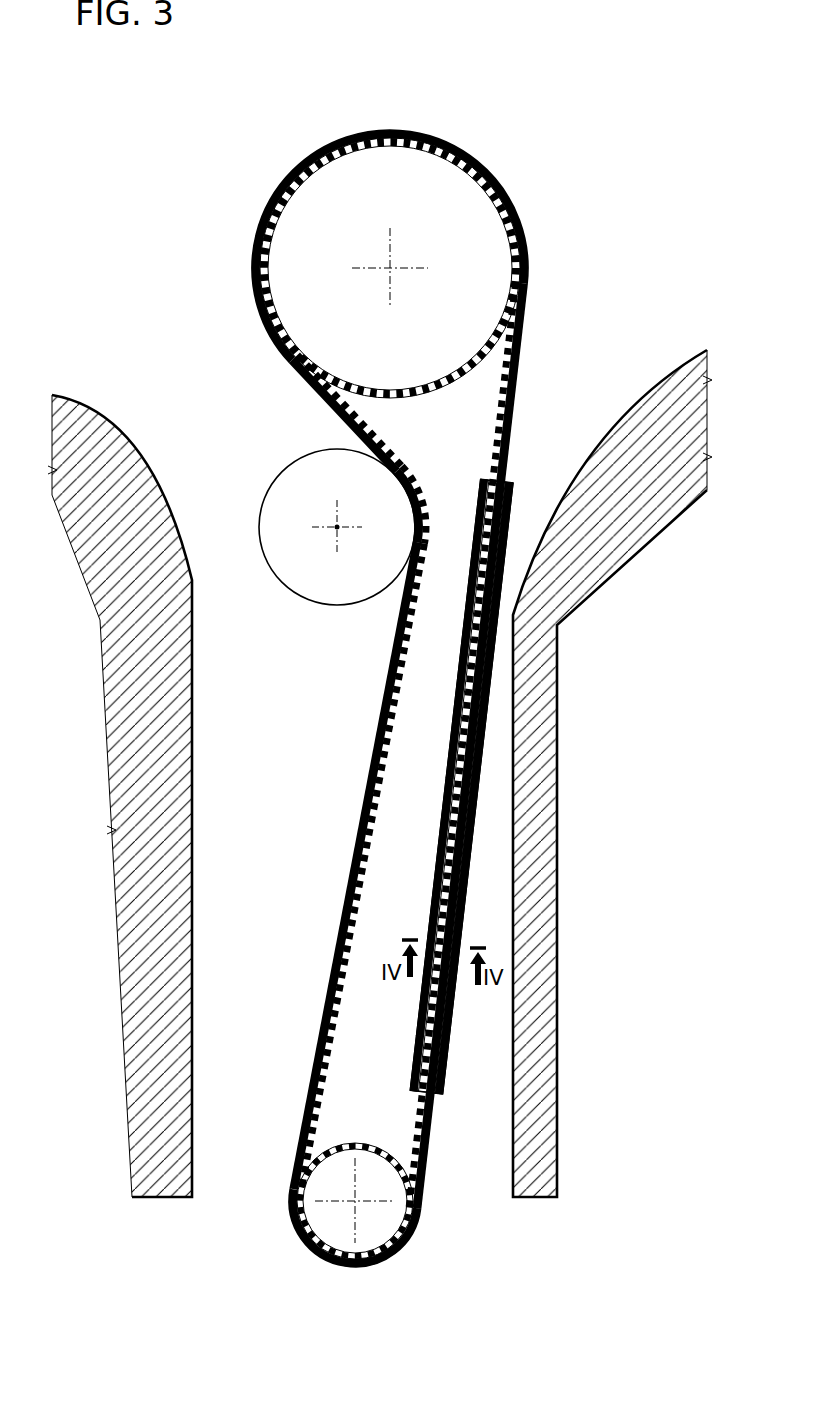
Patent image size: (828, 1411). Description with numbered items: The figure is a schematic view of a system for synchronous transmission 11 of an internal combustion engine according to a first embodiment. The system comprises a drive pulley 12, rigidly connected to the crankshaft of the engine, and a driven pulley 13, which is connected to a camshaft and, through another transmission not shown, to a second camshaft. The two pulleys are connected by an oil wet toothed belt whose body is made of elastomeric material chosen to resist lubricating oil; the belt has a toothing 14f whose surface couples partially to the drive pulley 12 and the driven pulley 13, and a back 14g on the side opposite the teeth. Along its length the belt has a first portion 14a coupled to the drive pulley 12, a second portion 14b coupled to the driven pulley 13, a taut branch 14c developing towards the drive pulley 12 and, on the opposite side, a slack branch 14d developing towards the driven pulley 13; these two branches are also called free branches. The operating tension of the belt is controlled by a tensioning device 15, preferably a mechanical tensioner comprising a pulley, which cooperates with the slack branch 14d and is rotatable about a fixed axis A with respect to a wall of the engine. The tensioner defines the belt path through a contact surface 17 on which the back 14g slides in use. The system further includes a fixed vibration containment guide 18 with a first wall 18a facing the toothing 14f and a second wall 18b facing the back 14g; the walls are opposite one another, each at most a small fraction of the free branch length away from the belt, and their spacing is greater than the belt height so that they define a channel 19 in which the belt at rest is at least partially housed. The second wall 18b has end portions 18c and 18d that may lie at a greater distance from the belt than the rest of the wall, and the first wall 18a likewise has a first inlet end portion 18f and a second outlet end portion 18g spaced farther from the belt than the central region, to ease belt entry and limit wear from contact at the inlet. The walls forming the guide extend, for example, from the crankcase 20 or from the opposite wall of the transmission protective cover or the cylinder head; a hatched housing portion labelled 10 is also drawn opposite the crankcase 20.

The housing portion 10 is at (590, 577).
The system for synchronous transmission 11 is at (158, 313).
The drive pulley 12 is at (315, 1238).
The driven pulley 13 is at (445, 180).
The first portion 14a is at (357, 1268).
The second portion 14b is at (333, 143).
The taut branch 14c is at (518, 372).
The slack branch 14d is at (357, 830).
The toothing 14f is at (396, 731).
The back 14g is at (374, 723).
The tensioning device 15 is at (300, 490).
The contact surface 17 is at (424, 510).
The fixed vibration containment guide 18 is at (473, 826).
The first wall 18a is at (426, 990).
The second wall 18b is at (487, 712).
The end portion 18c is at (515, 485).
The end portion 18d is at (444, 1089).
The first end portion 18f is at (482, 500).
The second outlet end portion 18g is at (416, 1074).
The channel 19 is at (477, 572).
The crankcase 20 is at (225, 968).
The fixed axis A is at (337, 532).